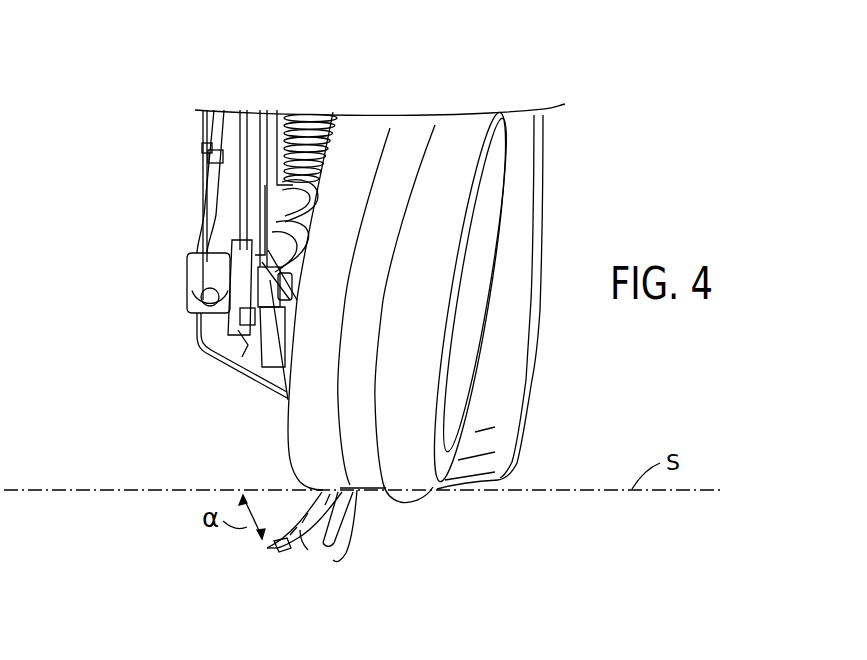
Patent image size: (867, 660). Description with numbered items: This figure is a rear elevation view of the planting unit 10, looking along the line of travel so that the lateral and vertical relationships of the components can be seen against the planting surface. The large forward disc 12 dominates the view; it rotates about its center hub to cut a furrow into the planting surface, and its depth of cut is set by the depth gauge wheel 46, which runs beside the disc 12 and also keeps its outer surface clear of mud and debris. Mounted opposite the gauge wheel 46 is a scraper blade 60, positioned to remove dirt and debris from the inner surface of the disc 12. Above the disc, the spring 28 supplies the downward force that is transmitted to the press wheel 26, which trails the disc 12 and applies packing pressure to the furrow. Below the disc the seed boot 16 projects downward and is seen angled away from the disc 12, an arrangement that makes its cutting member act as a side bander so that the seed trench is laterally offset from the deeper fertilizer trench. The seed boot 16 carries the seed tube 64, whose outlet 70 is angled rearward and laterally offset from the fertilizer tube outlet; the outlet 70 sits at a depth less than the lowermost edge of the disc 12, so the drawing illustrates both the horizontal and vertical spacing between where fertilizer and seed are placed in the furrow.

The planting unit 10 is at (116, 151).
The forward disc 12 is at (342, 557).
The seed boot 16 is at (280, 521).
The press wheel 26 is at (287, 398).
The spring 28 is at (307, 123).
The gauge wheel 46 is at (533, 343).
The scraper blade 60 is at (333, 523).
The seed tube 64 is at (305, 545).
The seed tube outlet 70 is at (285, 549).